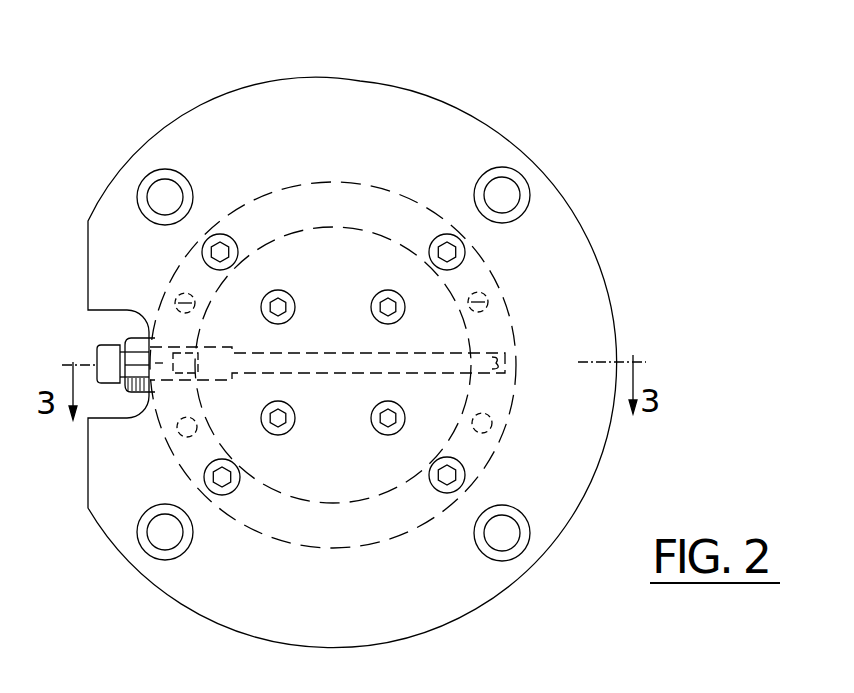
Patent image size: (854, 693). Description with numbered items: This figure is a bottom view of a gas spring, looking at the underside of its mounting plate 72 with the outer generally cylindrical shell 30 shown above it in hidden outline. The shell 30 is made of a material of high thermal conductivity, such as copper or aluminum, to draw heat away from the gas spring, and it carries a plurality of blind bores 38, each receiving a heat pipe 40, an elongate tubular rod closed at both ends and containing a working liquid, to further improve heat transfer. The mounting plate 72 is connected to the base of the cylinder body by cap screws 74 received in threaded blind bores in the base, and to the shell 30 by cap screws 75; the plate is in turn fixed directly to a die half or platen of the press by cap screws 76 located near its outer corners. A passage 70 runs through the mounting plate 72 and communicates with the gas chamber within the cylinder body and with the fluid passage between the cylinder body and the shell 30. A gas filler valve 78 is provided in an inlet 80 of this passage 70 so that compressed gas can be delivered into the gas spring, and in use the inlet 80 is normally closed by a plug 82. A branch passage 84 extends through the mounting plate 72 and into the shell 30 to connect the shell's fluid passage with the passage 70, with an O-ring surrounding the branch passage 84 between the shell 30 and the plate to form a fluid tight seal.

The shell 30 is at (366, 186).
The blind bores 38 is at (185, 280).
The heat pipe 40 is at (205, 300).
The mounting plate passage 70 is at (398, 360).
The mounting plate 72 is at (611, 328).
The cap screws 74 is at (371, 304).
The cap screws 75 is at (233, 241).
The cap screws 76 is at (175, 187).
The gas filler valve 78 is at (176, 340).
The inlet 80 is at (136, 334).
The plug 82 is at (108, 349).
The branch passage 84 is at (513, 343).